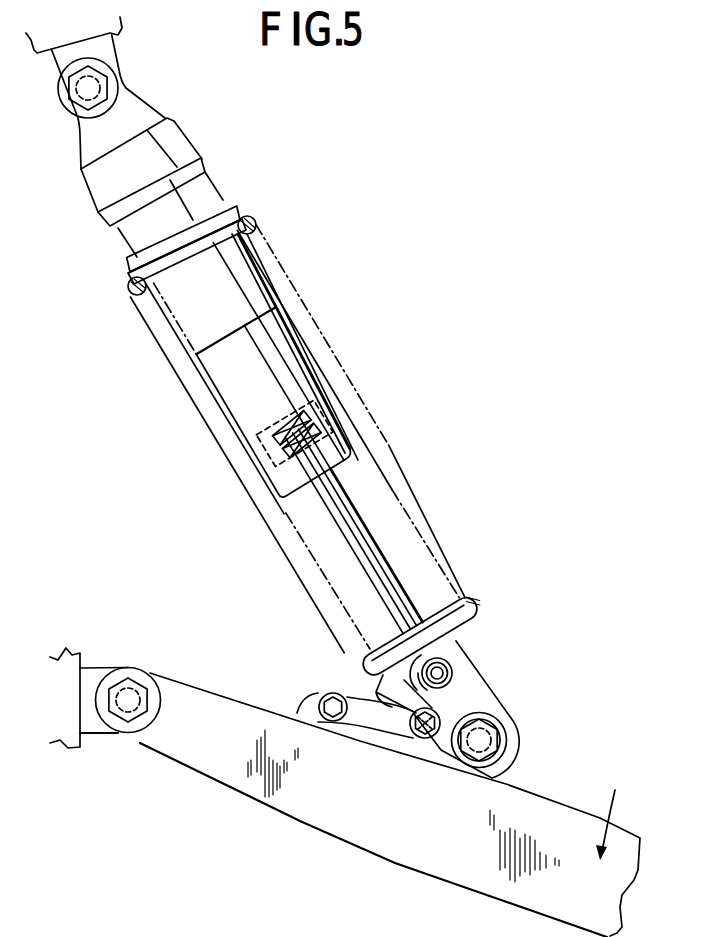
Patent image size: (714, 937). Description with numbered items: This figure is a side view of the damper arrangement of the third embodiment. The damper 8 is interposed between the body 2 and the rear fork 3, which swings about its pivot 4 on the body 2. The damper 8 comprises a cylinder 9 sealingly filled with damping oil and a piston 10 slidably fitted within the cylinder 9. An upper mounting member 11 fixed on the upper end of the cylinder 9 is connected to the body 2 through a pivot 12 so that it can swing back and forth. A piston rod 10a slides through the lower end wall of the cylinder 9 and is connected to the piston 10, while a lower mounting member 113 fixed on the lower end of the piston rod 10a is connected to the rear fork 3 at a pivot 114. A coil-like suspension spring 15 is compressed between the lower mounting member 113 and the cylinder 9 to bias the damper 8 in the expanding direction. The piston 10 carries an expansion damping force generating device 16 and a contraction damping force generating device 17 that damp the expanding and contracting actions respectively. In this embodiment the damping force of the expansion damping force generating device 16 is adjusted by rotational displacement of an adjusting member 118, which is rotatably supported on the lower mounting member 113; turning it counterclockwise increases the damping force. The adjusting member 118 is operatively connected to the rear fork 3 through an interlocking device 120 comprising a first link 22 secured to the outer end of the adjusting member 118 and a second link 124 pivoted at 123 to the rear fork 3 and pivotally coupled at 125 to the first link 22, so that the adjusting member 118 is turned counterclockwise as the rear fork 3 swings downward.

The body 2 is at (124, 34).
The rear fork 3 is at (403, 868).
The pivot 4 is at (132, 684).
The damper 8 is at (314, 366).
The cylinder 9 is at (284, 316).
The piston 10 is at (325, 418).
The piston rod 10a is at (373, 551).
The upper mounting member 11 is at (81, 150).
The pivot 12 is at (75, 89).
The suspension spring 15 is at (258, 224).
The expansion damping force generating device 16 is at (306, 466).
The contraction damping force generating device 17 is at (292, 418).
The first link 22 is at (420, 704).
The lower mounting member 113 is at (478, 690).
The pivot 114 is at (494, 740).
The adjusting member 118 is at (450, 668).
The interlocking device 120 is at (372, 728).
The pivot 123 is at (321, 698).
The second link 124 is at (390, 720).
The pivot 125 is at (423, 740).